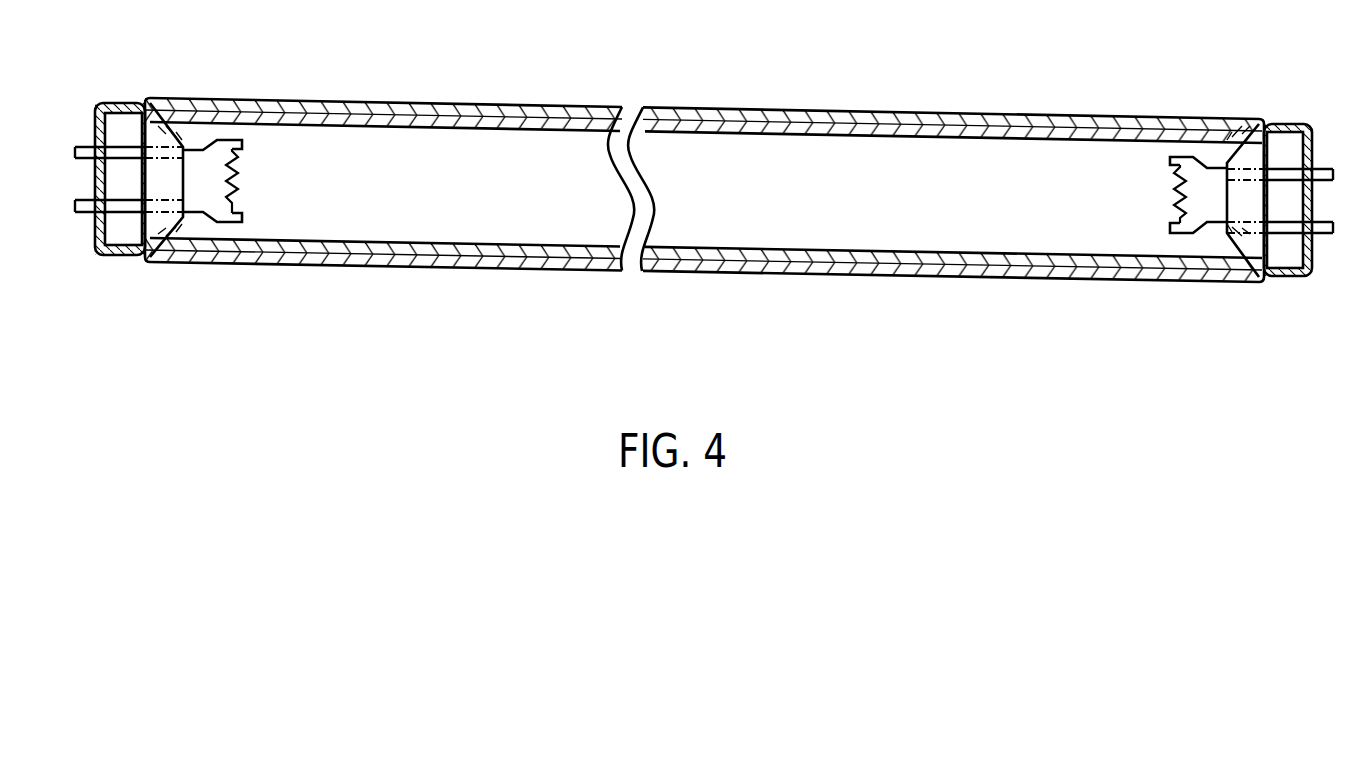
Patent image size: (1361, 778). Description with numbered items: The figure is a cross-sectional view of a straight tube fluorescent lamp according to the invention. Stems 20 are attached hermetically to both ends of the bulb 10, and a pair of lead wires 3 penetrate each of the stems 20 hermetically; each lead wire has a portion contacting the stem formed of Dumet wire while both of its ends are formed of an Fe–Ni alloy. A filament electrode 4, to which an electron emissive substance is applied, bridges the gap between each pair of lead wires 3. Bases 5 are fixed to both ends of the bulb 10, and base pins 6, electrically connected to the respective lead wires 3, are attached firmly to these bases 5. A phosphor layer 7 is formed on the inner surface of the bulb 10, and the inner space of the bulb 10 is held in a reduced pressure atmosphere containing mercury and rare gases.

The lead wire 3 is at (232, 138).
The filament electrode 4 is at (237, 170).
The base 5 is at (118, 104).
The base pin 6 is at (80, 215).
The phosphor layer 7 is at (857, 125).
The bulb 10 is at (797, 111).
The stem 20 is at (160, 128).